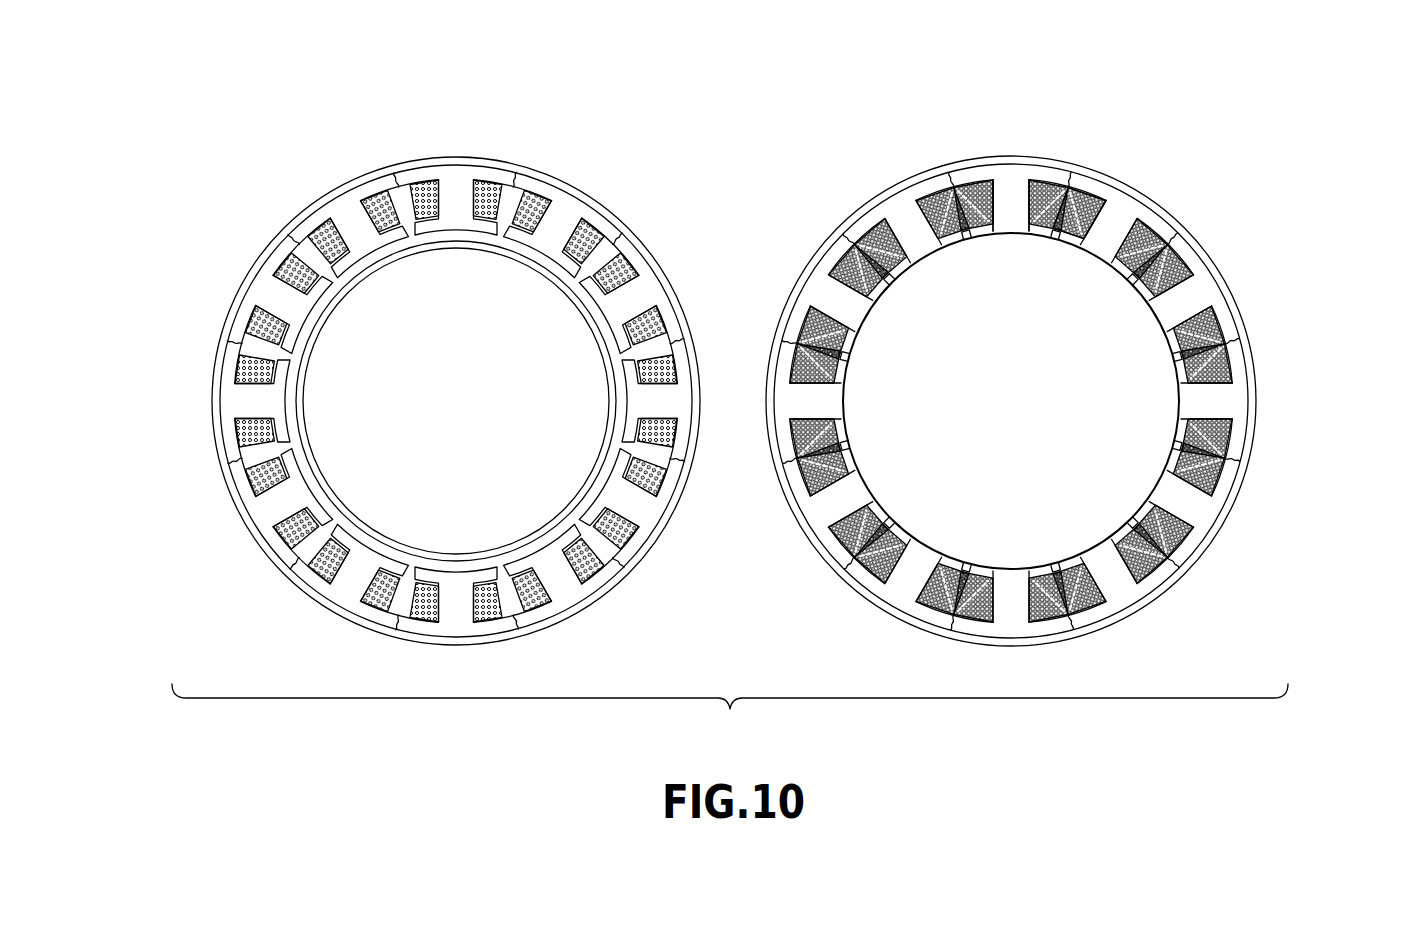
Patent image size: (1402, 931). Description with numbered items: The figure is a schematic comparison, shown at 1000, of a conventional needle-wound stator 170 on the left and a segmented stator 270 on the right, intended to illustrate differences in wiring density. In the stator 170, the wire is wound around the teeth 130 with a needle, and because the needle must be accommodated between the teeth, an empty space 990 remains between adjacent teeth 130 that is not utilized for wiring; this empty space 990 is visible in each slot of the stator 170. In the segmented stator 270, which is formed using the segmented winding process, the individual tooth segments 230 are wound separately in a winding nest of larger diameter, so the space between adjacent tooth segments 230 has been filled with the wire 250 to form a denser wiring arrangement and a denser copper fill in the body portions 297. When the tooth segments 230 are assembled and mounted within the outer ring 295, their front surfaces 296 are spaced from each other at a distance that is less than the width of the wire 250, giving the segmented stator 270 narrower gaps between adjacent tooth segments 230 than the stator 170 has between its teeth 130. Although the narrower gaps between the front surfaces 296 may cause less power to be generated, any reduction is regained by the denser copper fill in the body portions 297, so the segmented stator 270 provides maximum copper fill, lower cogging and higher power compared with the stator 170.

The stator 170 is at (460, 148).
The empty space 990 is at (603, 257).
The teeth 130 is at (528, 548).
The segmented stator 270 is at (1152, 181).
The body portions 297 is at (1003, 250).
The front surfaces 296 is at (1083, 187).
The wire 250 is at (1147, 223).
The outer ring 295 is at (1258, 368).
The tooth segments 230 is at (1080, 545).
The comparison 1000 is at (730, 714).